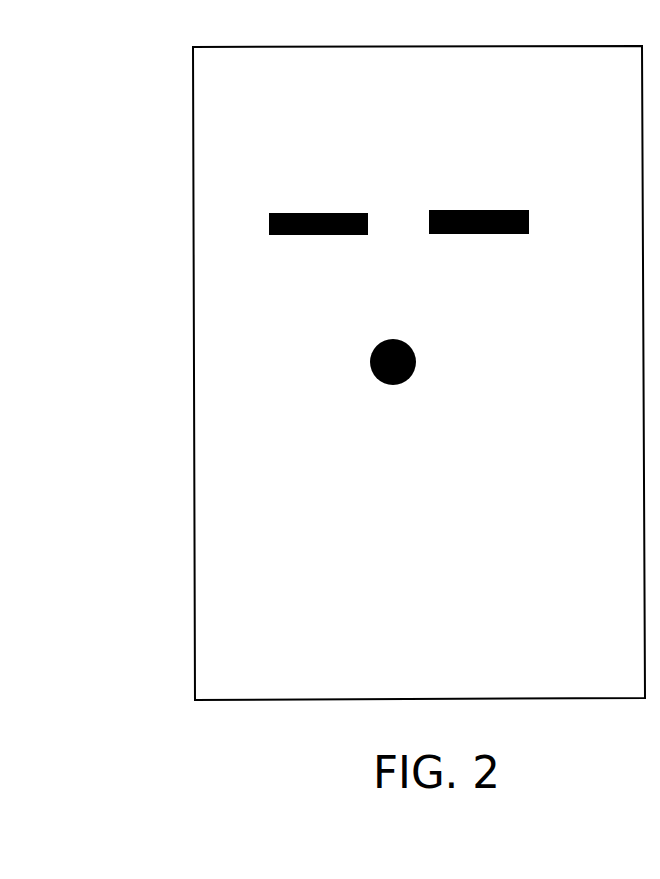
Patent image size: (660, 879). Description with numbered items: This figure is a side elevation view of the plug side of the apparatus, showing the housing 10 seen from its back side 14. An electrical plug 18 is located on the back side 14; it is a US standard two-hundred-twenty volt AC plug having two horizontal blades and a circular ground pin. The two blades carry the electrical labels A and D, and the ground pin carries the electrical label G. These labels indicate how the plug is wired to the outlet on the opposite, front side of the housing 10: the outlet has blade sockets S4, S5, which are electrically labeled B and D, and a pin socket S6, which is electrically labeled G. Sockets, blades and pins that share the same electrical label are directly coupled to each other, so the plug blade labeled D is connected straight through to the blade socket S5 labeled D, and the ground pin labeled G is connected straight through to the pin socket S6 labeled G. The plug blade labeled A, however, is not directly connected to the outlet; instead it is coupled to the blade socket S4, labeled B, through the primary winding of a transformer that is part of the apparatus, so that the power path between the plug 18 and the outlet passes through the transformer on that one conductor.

The housing 10 is at (193, 233).
The back side 14 is at (298, 613).
The electrical label A is at (302, 213).
The electrical label D is at (463, 210).
The electrical label G is at (370, 358).
The blade socket S4 is at (333, 213).
The blade socket S5 is at (507, 210).
The pin socket S6 is at (407, 382).
The electrical plug 18 is at (336, 406).